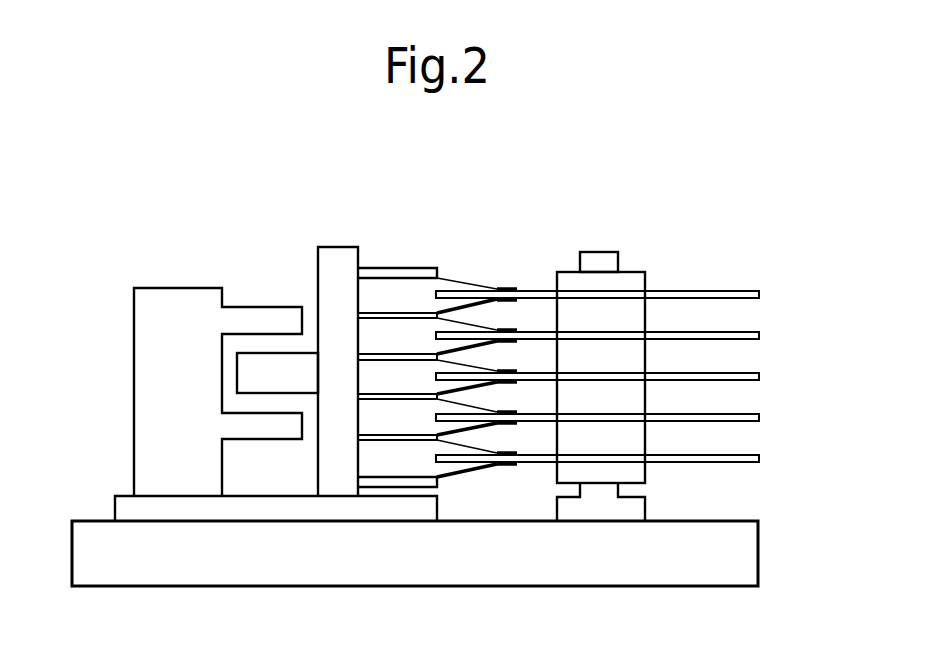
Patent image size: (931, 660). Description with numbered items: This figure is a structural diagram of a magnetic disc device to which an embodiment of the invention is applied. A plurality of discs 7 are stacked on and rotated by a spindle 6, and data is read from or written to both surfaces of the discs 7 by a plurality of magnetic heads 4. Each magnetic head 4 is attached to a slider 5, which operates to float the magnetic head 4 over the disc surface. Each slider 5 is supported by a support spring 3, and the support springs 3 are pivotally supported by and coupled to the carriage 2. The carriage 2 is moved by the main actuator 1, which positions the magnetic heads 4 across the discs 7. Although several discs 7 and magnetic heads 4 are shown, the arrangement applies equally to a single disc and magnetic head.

The main actuator 1 is at (270, 368).
The carriage 2 is at (397, 268).
The support spring 3 is at (462, 280).
The magnetic head 4 is at (513, 464).
The slider 5 is at (505, 464).
The spindle 6 is at (603, 252).
The disc 7 is at (723, 290).